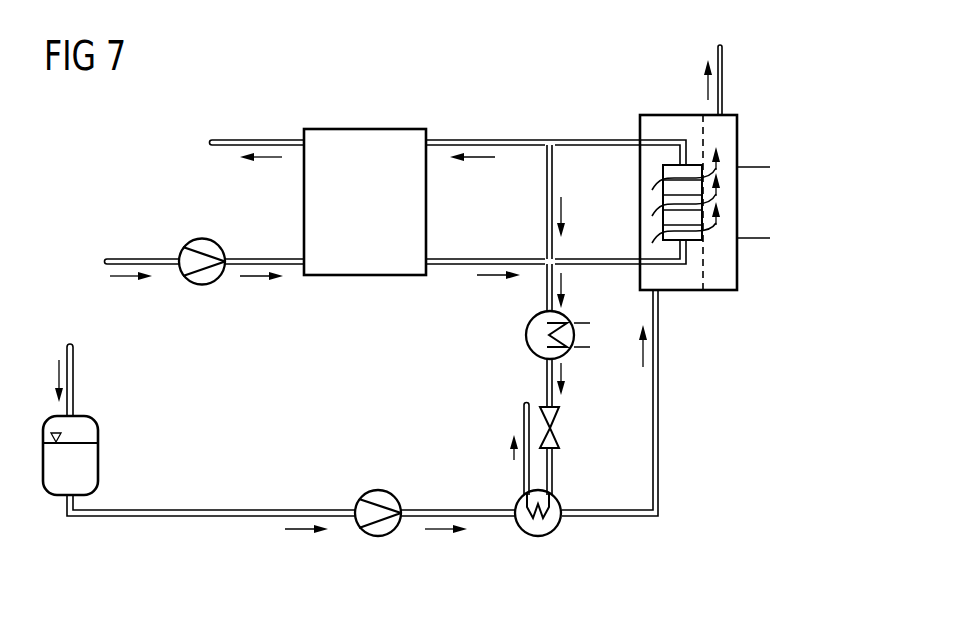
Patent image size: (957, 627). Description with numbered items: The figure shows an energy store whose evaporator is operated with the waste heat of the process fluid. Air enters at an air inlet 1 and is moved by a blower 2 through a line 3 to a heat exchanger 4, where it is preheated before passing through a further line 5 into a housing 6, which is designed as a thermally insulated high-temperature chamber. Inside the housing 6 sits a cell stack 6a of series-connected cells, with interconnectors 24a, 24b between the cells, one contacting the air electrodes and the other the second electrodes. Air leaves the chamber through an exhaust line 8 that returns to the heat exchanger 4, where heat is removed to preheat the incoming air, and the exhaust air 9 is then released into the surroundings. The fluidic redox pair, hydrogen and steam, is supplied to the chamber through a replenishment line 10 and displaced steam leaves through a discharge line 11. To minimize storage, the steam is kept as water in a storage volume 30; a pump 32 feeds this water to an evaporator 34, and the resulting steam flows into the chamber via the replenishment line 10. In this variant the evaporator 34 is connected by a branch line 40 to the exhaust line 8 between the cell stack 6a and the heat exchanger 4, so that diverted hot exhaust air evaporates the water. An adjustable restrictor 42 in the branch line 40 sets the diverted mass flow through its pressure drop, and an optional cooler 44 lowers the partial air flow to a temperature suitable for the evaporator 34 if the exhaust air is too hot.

The air inlet 1 is at (125, 258).
The blower 2 is at (202, 237).
The line 3 is at (257, 258).
The heat exchanger 4 is at (362, 128).
The further line 5 is at (480, 258).
The housing 6 is at (660, 114).
The cell stack 6a is at (663, 198).
The exhaust line 8 is at (476, 139).
The exhaust air 9 is at (257, 139).
The replenishment line 10 is at (658, 345).
The discharge line 11 is at (722, 78).
The interconnector 24a is at (762, 166).
The interconnector 24b is at (762, 240).
The storage volume 30 is at (98, 460).
The pump 32 is at (378, 537).
The evaporator 34 is at (538, 537).
The branch line 40 is at (547, 185).
The adjustable restrictor 42 is at (561, 420).
The cooler 44 is at (526, 335).